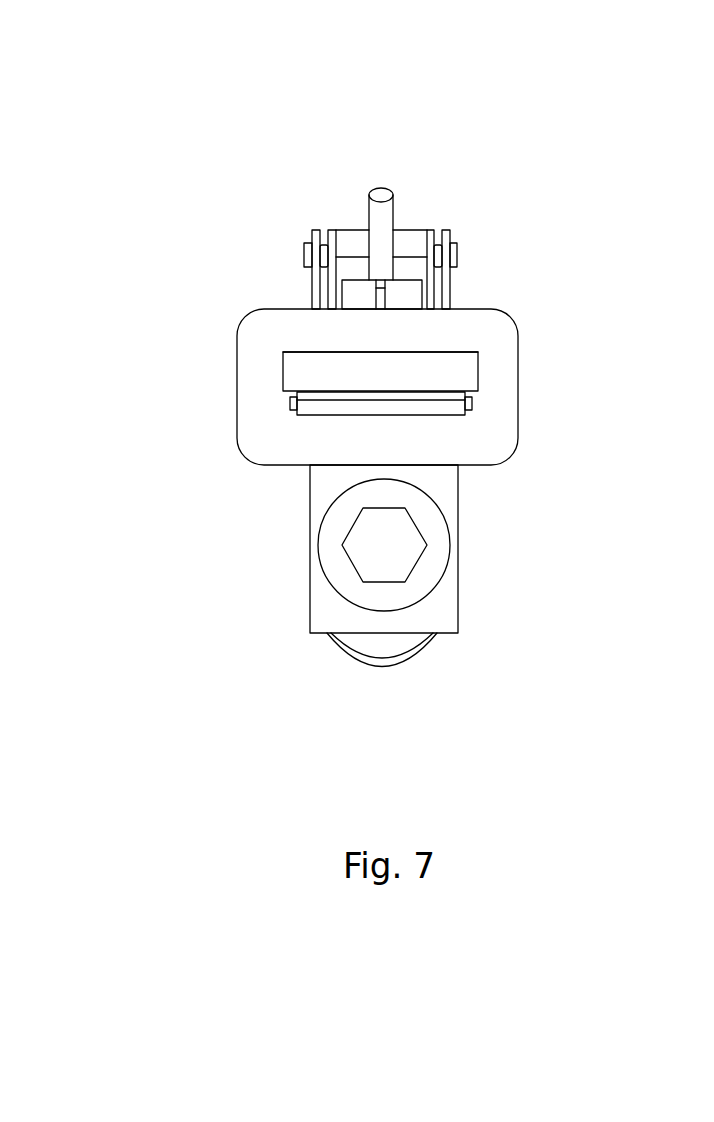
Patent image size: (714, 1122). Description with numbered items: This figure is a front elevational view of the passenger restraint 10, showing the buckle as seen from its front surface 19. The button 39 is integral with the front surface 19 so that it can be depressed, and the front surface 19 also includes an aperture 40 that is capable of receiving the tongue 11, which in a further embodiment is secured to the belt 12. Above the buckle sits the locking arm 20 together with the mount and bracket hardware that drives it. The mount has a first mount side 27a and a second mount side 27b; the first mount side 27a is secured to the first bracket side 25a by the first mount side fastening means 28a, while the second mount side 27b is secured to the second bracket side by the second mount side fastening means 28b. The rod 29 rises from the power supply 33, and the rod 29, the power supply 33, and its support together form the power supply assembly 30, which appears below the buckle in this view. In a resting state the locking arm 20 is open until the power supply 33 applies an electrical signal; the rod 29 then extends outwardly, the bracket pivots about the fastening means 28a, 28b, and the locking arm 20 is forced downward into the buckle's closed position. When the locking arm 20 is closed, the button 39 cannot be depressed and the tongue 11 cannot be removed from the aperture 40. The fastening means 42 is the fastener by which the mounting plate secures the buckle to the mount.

The passenger restraint 10 is at (171, 75).
The tongue 11 is at (290, 403).
The belt 12 is at (453, 410).
The front surface 19 is at (300, 457).
The locking arm 20 is at (405, 263).
The first bracket side 25a is at (330, 230).
The first mount side 27a is at (312, 292).
The second mount side 27b is at (450, 282).
The first mount side fastening means 28a is at (305, 257).
The second mount side fastening means 28b is at (457, 253).
The rod 29 is at (381, 192).
The power supply assembly 30 is at (303, 670).
The power supply 33 is at (403, 640).
The button 39 is at (393, 387).
The aperture 40 is at (446, 354).
The fastening means 42 is at (398, 559).